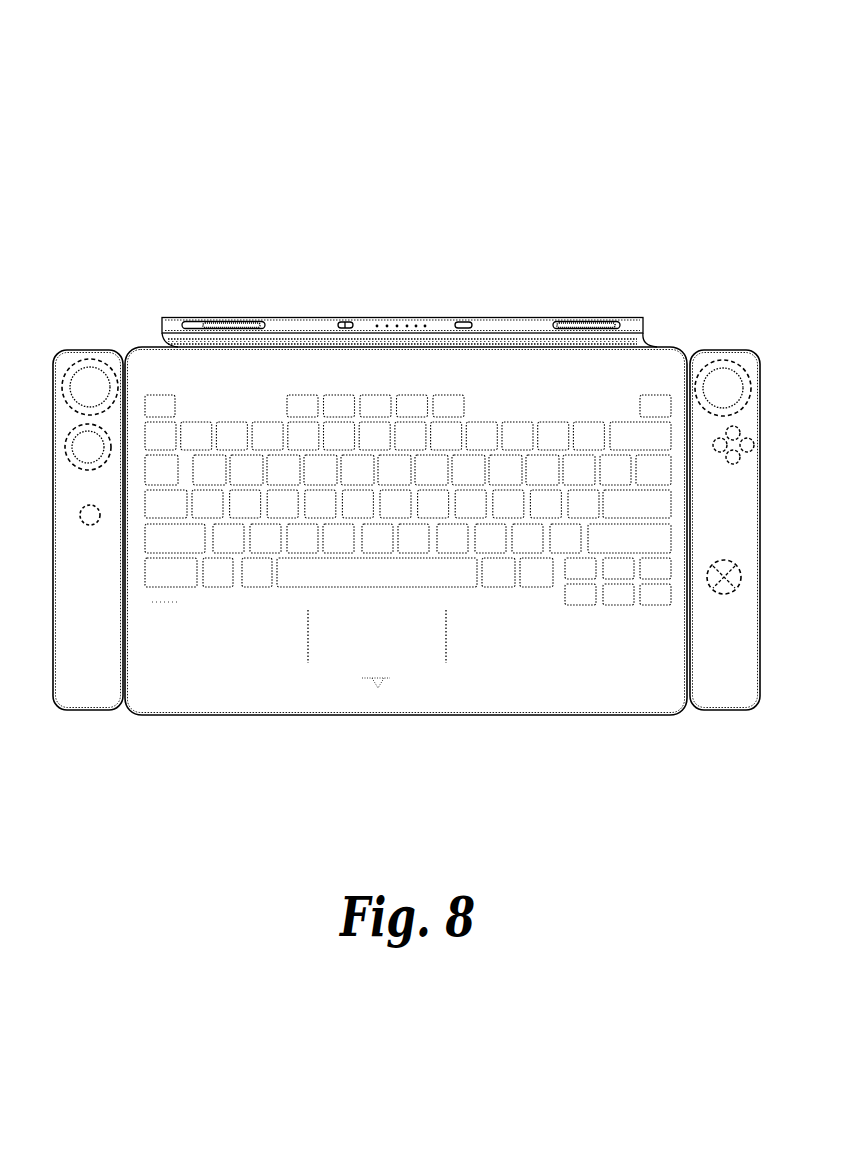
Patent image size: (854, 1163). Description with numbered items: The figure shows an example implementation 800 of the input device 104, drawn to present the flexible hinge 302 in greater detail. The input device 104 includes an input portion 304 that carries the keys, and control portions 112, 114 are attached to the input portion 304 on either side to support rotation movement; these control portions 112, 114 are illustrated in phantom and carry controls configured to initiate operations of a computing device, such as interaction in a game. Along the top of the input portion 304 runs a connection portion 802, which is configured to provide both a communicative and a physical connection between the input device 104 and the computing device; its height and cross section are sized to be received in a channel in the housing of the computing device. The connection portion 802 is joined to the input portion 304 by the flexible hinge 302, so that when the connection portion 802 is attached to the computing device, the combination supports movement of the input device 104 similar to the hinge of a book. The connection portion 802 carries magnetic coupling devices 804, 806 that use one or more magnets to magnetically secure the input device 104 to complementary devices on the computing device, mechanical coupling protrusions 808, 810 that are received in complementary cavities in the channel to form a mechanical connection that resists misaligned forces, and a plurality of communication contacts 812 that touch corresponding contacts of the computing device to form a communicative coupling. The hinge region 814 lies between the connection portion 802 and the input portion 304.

The example implementation 800 is at (140, 75).
The input device 104 is at (446, 716).
The input portion 304 is at (201, 688).
The control portion 112 is at (90, 711).
The control portion 114 is at (724, 711).
The flexible hinge 302 is at (650, 335).
The connection portion 802 is at (173, 317).
The magnetic coupling device 804 is at (210, 320).
The magnetic coupling device 806 is at (585, 320).
The mechanical coupling protrusion 808 is at (344, 320).
The mechanical coupling protrusion 810 is at (468, 320).
The communication contacts 812 is at (413, 306).
The hinge 814 is at (510, 346).